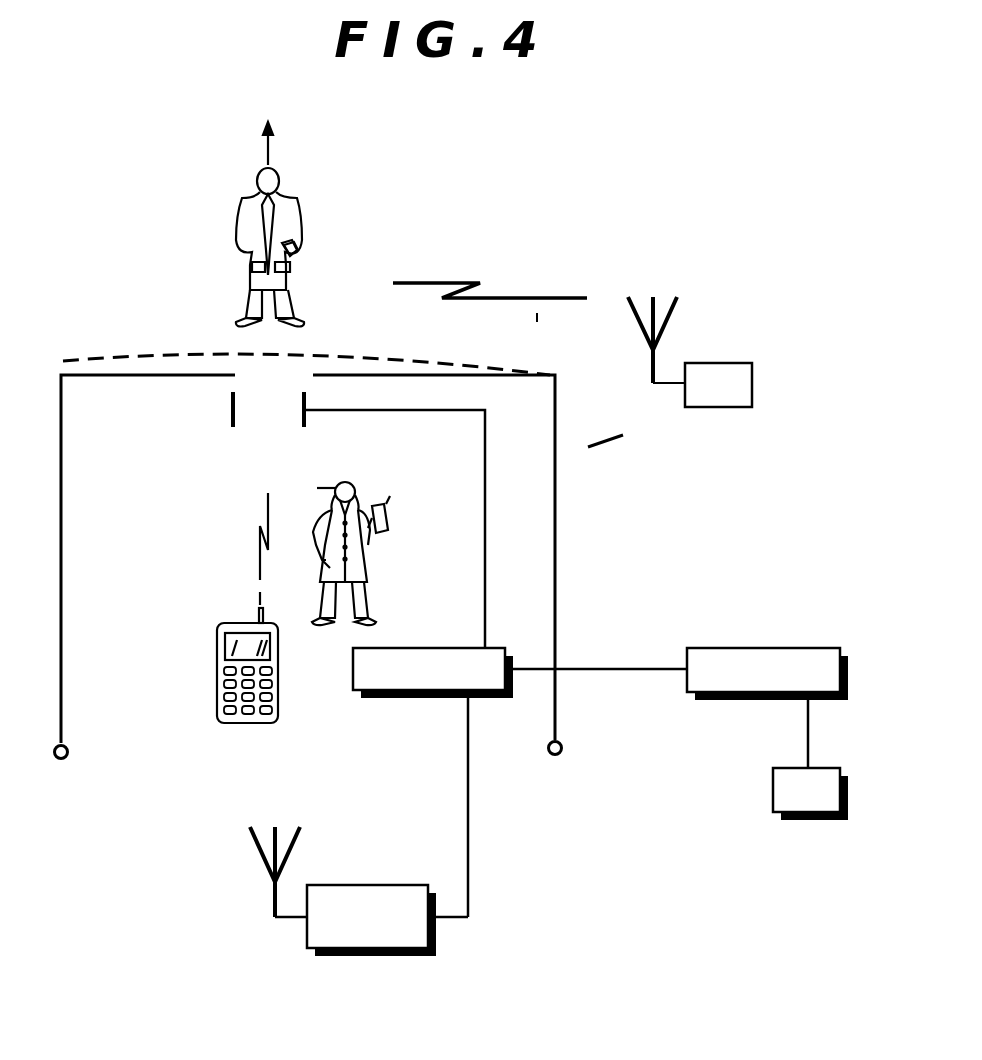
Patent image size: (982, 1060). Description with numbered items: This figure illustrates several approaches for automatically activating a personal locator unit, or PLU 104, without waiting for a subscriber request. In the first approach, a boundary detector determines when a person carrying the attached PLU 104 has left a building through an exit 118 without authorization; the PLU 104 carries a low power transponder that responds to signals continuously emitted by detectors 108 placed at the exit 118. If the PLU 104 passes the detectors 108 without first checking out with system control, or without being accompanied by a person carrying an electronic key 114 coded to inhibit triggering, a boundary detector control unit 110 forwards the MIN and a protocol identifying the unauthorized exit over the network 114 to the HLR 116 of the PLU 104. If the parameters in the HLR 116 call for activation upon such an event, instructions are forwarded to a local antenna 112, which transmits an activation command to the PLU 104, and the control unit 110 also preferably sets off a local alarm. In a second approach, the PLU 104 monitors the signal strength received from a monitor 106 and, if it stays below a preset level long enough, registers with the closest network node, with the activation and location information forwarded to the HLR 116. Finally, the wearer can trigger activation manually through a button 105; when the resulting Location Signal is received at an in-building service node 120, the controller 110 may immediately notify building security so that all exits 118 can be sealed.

The PLU 104 is at (300, 255).
The button 105 is at (308, 220).
The monitor 106 is at (224, 650).
The detectors 108 is at (230, 405).
The boundary detector control unit 110 is at (438, 700).
The local antenna 112 is at (675, 312).
The network 114 is at (387, 530).
The HLR 116 is at (848, 795).
The exit 118 is at (258, 427).
The in-building service node 120 is at (372, 953).